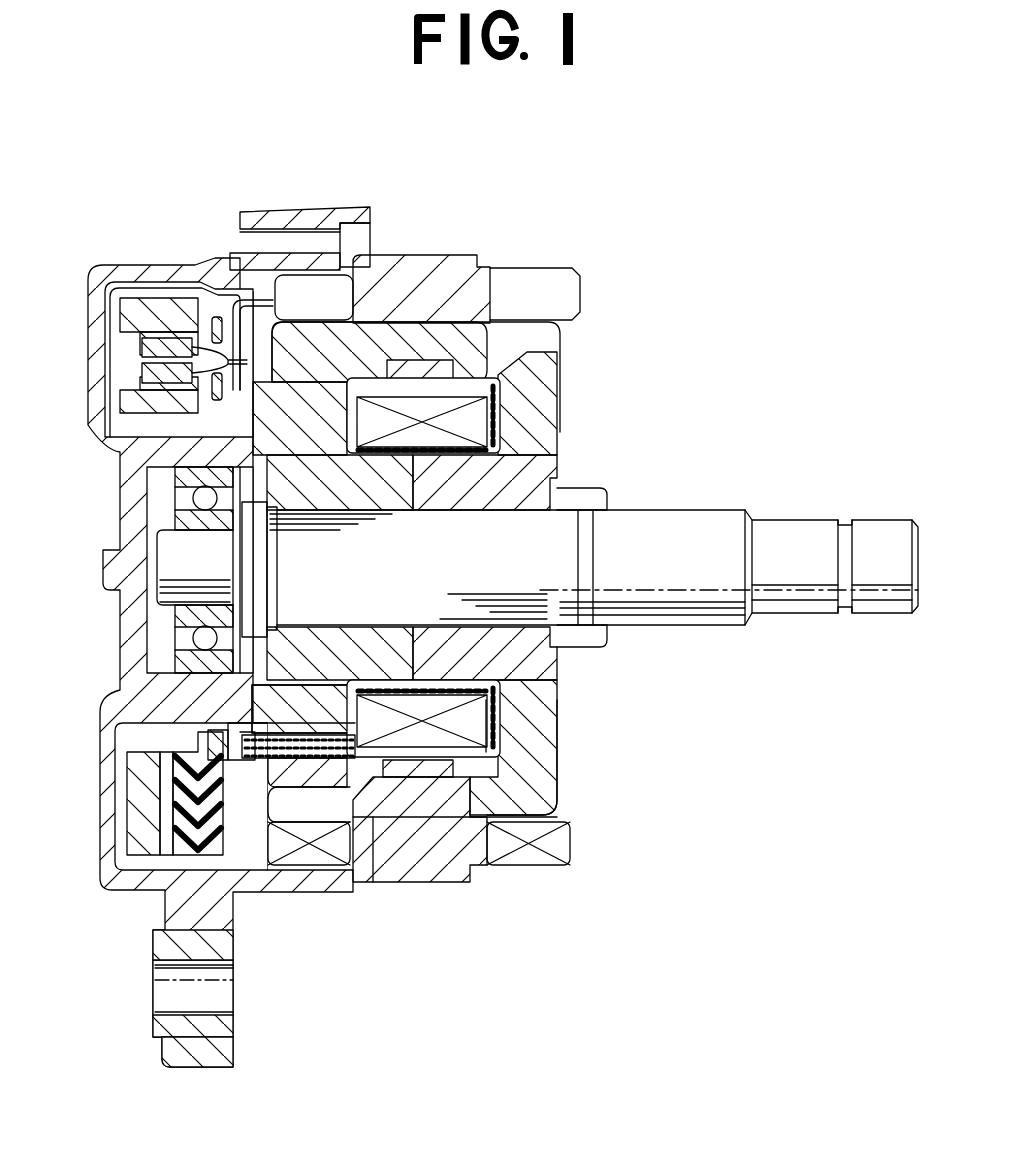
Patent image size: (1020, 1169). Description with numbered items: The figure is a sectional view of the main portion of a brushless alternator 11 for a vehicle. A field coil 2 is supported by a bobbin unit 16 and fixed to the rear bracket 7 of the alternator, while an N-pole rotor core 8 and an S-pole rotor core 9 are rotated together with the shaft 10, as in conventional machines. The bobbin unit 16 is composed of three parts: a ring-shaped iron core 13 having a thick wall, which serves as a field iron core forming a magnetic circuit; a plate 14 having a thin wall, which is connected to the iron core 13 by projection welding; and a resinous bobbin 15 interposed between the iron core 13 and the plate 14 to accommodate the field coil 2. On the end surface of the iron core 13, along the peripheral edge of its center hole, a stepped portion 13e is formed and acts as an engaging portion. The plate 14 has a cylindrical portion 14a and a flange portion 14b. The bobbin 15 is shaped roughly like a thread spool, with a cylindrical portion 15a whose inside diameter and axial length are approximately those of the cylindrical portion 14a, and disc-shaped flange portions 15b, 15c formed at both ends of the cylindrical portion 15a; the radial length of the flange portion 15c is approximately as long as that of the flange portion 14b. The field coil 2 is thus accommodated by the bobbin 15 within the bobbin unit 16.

The field coil 2 is at (460, 807).
The rear bracket 7 is at (98, 808).
The N-pole rotor core 8 is at (470, 873).
The S-pole rotor core 9 is at (283, 777).
The shaft 10 is at (685, 603).
The brushless alternator 11 is at (598, 210).
The iron core 13 is at (333, 713).
The stepped portion 13e is at (333, 685).
The plate 14 is at (498, 705).
The cylindrical portion 14a is at (480, 673).
The flange portion 14b is at (557, 782).
The bobbin 15 is at (358, 757).
The cylindrical portion 15a is at (406, 697).
The flange portion 15b is at (428, 733).
The flange portion 15c is at (487, 738).
The bobbin unit 16 is at (310, 722).